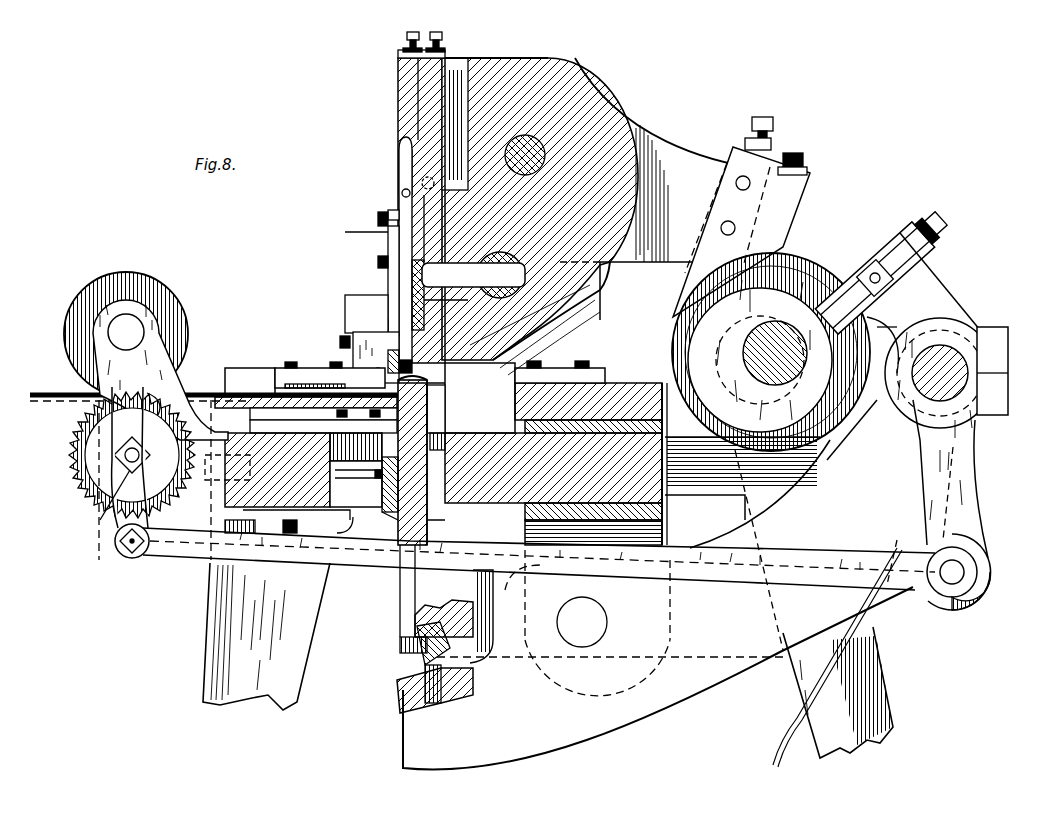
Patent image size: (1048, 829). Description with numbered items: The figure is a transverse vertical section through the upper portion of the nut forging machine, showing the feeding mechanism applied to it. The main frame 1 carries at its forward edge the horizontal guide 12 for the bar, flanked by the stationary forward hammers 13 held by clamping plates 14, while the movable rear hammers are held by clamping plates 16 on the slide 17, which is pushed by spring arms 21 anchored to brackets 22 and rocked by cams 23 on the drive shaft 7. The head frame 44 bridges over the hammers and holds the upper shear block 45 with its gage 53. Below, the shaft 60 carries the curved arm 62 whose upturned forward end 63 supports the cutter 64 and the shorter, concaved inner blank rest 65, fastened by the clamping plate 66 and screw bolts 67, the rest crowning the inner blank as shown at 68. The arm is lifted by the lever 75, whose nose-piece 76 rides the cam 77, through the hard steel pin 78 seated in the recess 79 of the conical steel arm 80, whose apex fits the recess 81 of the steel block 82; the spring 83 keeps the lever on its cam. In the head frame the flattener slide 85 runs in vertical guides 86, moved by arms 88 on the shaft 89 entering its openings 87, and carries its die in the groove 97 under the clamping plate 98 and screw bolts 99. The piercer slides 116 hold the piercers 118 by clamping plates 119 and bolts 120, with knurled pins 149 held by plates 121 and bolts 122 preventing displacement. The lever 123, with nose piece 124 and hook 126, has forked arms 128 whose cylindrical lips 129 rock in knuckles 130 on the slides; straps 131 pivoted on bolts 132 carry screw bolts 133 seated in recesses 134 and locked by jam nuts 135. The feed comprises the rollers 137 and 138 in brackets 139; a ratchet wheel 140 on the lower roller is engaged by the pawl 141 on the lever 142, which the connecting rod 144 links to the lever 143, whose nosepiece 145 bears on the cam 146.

The main frame 1 is at (553, 468).
The drive shaft 7 is at (746, 346).
The horizontal guide 12 is at (305, 375).
The stationary forward hammers 13 is at (296, 380).
The clamping plates 14 is at (262, 372).
The clamping plates 16 is at (558, 372).
The slide 17 is at (618, 392).
The spring arms 21 is at (741, 464).
The brackets 22 is at (668, 528).
The cams 23 is at (771, 351).
The head frame 44 is at (540, 209).
The upper shear block 45 is at (399, 357).
The gage 53 is at (438, 409).
The shaft 60 is at (940, 378).
The arm 62 is at (838, 681).
The forward end 63 is at (416, 460).
The cutter 64 is at (397, 428).
The inner blank rest 65 is at (430, 420).
The clamping plate 66 is at (390, 514).
The screw bolts 67 is at (375, 480).
The crowned inner nut 68 is at (450, 392).
The lever 75 is at (658, 605).
The nose-piece 76 is at (924, 504).
The cam 77 is at (857, 441).
The pin 78 is at (473, 686).
The recess 79 is at (425, 672).
The conical steel arm 80 is at (417, 660).
The recess 81 is at (404, 646).
The steel block 82 is at (438, 608).
The spring 83 is at (860, 636).
The flattener slide 85 is at (369, 219).
The vertical guides 86 is at (430, 236).
The openings 87 is at (436, 258).
The arms 88 is at (473, 275).
The shaft 89 is at (500, 275).
The groove or recess 97 is at (412, 359).
The clamping plate 98 is at (339, 334).
The screw bolts 99 is at (368, 373).
The piercer slides 116 is at (432, 304).
The piercers 118 is at (399, 282).
The clamping plates 119 is at (366, 314).
The bolts 120 is at (378, 262).
The plates 121 is at (359, 235).
The bolts 122 is at (388, 214).
The lever 123 is at (692, 160).
The nose piece 124 is at (790, 255).
The hook 126 is at (690, 272).
The forked arms 128 is at (470, 60).
The cylindrical lip 129 is at (399, 160).
The knuckle 130 is at (422, 183).
The straps 131 is at (400, 56).
The bolts 132 is at (403, 197).
The screw bolts 133 is at (420, 33).
The recesses 134 is at (404, 78).
The jam nuts 135 is at (443, 46).
The roller 137 is at (138, 280).
The roller 138 is at (72, 436).
The brackets 139 is at (160, 378).
The ratchet wheel 140 is at (75, 470).
The pawl 141 is at (140, 390).
The lever 142 is at (119, 458).
The lever 143 is at (975, 442).
The connecting rod 144 is at (553, 567).
The nosepiece 145 is at (885, 312).
The cam 146 is at (760, 356).
The pins 149 is at (388, 246).